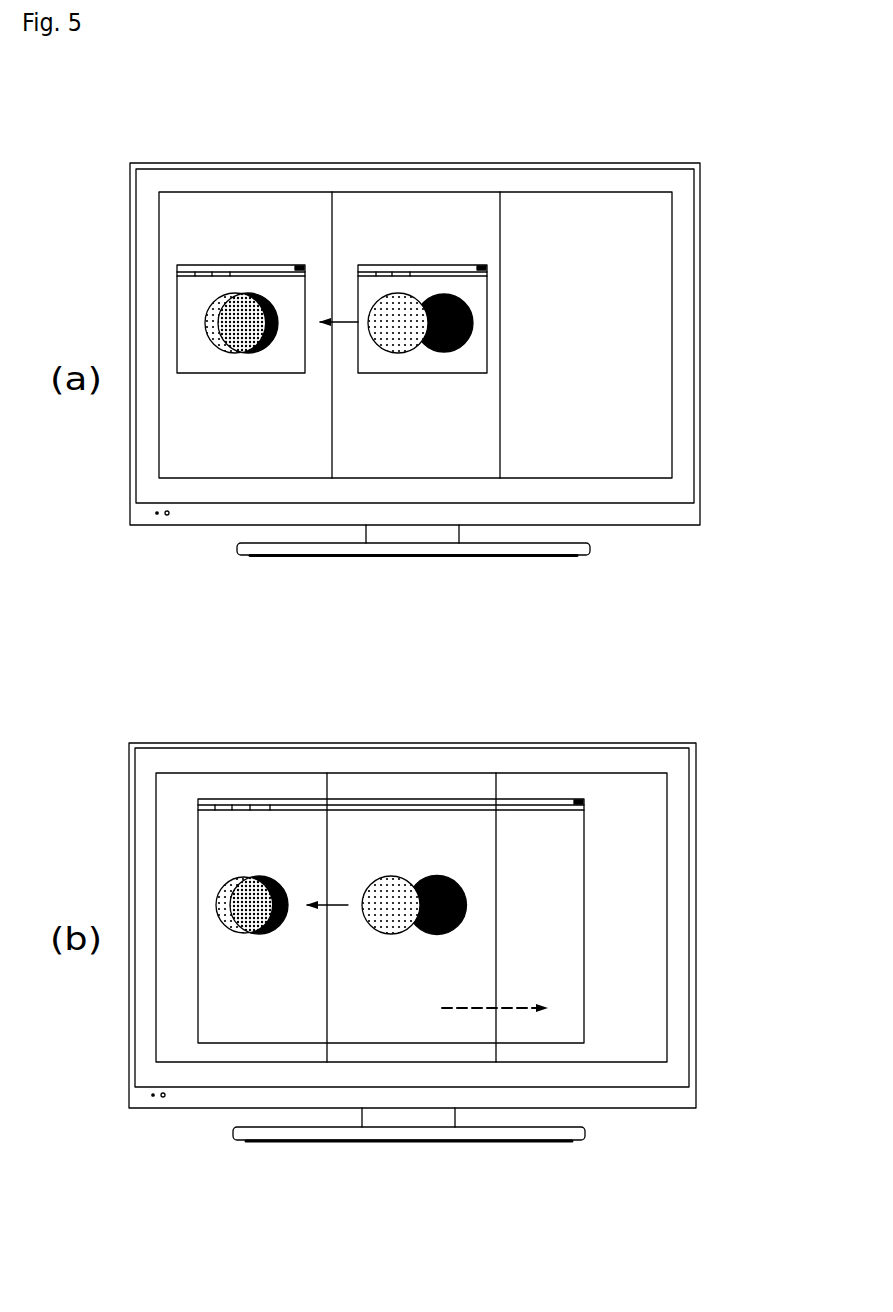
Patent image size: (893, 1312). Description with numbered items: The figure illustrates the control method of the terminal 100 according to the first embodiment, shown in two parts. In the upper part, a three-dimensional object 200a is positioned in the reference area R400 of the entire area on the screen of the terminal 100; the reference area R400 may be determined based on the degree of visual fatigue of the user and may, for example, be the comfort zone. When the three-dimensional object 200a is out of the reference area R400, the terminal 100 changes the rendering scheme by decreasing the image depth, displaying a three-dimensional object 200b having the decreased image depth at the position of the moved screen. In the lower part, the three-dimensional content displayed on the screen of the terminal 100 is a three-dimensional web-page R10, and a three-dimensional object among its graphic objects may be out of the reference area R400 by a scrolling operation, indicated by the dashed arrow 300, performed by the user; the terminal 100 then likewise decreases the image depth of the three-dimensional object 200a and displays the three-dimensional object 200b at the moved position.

The terminal 100 is at (686, 154).
The 3D object 200a is at (385, 285).
The 3D object having the decreased image depth 200b is at (253, 285).
The reference area R400 is at (463, 212).
The 3D web-page R10 is at (584, 941).
The drag gesture path 300 is at (513, 1010).